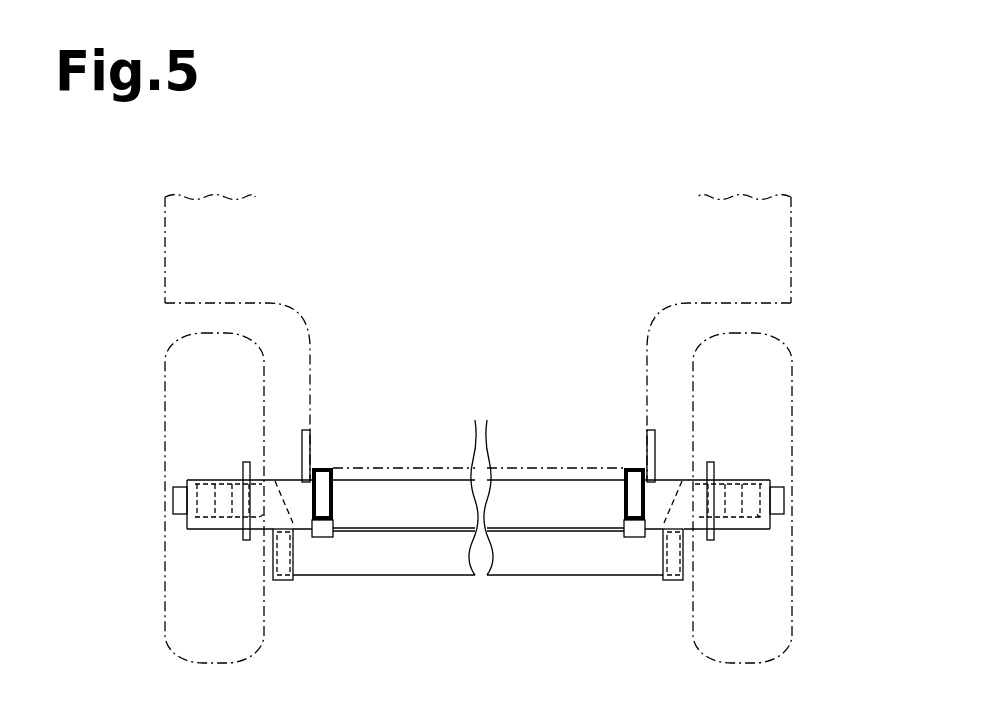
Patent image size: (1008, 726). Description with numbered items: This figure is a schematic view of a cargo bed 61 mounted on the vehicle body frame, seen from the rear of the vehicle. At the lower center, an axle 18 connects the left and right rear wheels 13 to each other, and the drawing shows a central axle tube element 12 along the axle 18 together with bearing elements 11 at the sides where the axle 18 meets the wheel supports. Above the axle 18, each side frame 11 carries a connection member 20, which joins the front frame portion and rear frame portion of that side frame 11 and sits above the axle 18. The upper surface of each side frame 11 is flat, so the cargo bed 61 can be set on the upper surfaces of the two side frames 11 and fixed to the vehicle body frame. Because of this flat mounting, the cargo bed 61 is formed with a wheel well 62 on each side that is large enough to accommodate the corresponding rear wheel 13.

The cargo bed 61 is at (165, 243).
The wheel well 62 is at (200, 303).
The rear wheel 13 is at (165, 580).
The connection member 20 is at (302, 455).
The side frame 11 is at (322, 530).
The axle tube 12 is at (522, 523).
The axle 18 is at (427, 568).